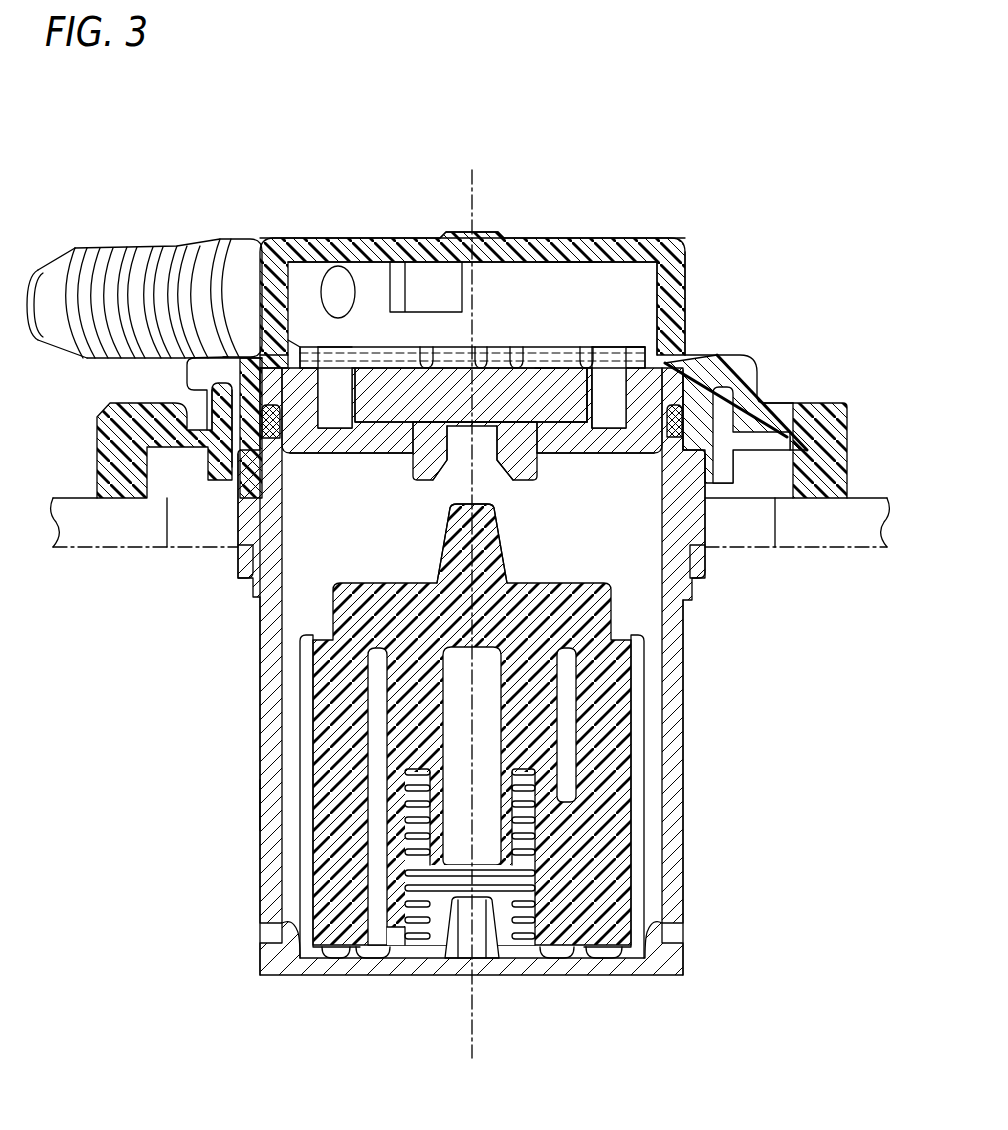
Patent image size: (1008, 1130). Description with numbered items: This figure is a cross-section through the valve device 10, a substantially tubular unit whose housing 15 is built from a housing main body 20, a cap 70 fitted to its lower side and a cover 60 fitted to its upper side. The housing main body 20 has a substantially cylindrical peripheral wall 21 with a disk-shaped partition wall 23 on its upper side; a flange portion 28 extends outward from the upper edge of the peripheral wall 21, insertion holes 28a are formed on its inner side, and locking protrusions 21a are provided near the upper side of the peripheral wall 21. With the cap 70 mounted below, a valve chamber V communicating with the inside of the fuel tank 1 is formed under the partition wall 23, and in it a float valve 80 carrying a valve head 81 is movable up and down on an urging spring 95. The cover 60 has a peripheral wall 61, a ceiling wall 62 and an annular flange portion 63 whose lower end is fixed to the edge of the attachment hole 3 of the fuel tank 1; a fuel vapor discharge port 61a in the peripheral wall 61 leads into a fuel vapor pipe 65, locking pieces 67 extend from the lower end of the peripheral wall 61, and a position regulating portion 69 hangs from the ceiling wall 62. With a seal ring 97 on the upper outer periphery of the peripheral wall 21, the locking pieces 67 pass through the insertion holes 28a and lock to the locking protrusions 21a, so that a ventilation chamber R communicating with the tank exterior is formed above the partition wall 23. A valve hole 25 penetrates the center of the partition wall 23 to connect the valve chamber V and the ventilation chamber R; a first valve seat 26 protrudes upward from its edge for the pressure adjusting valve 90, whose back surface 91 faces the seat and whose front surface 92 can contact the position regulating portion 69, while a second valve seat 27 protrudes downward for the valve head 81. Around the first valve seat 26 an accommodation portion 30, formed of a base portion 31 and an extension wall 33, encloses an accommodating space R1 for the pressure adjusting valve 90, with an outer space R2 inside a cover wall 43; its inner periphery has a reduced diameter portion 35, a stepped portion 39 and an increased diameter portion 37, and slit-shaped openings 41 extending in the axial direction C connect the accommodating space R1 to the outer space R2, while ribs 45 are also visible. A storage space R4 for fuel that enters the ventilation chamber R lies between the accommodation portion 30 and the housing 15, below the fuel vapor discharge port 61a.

The fuel tank 1 is at (865, 545).
The attachment hole 3 is at (773, 530).
The valve device 10 is at (413, 235).
The housing 15 is at (257, 805).
The housing main body 20 is at (688, 703).
The peripheral wall 21 is at (672, 745).
The locking protrusions 21a is at (235, 525).
The partition wall 23 is at (370, 425).
The valve hole 25 is at (455, 430).
The first valve seat 26 is at (535, 430).
The second valve seat 27 is at (515, 445).
The flange portion 28 is at (787, 415).
The insertion holes 28a is at (227, 480).
The accommodation portion 30 is at (620, 350).
The base portion 31 is at (265, 350).
The extension wall 33 is at (320, 345).
The reduced diameter portion 35 is at (595, 400).
The increased diameter portion 37 is at (586, 355).
The stepped portion 39 is at (630, 338).
The opening 41 is at (482, 355).
The cover wall 43 is at (300, 345).
The diaphragm rib 45 is at (517, 355).
The cover 60 is at (688, 245).
The peripheral wall 61 is at (677, 282).
The fuel vapor discharge port 61a is at (338, 290).
The ceiling wall 62 is at (597, 250).
The flange portion 63 is at (838, 460).
The fuel vapor pipe 65 is at (113, 268).
The locking pieces 67 is at (245, 565).
The position regulating portion 69 is at (452, 275).
The cap 70 is at (530, 975).
The float valve 80 is at (605, 845).
The valve head 81 is at (445, 510).
The pressure adjusting valve 90 is at (541, 365).
The back surface 91 is at (582, 425).
The front surface 92 is at (385, 365).
The urging spring 95 is at (535, 935).
The seal ring 97 is at (727, 370).
The ventilation chamber R is at (567, 272).
The accommodating space R1 is at (345, 440).
The outer space R2 is at (333, 420).
The storage space R4 is at (672, 415).
The valve chamber V is at (590, 538).
The axial direction C is at (472, 1050).